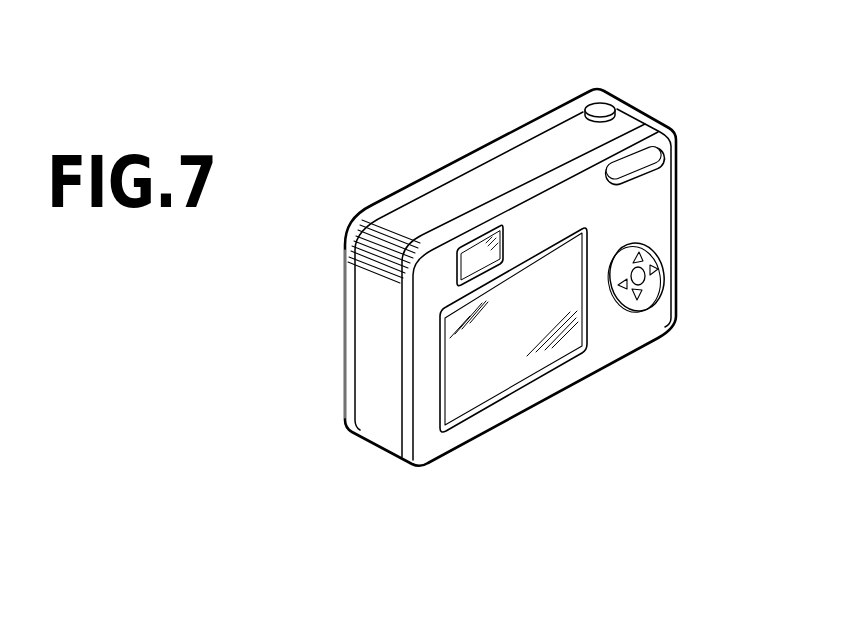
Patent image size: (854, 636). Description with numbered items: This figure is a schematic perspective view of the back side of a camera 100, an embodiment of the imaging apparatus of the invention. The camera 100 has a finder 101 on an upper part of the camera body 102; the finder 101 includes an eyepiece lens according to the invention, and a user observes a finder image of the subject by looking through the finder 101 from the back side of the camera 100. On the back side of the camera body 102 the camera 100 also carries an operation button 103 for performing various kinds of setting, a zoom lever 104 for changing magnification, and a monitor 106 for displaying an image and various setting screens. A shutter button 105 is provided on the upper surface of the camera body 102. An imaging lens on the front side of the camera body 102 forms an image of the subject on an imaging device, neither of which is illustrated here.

The camera 100 is at (410, 79).
The finder 101 is at (470, 253).
The camera body 102 is at (366, 352).
The operation button 103 is at (660, 280).
The zoom lever 104 is at (665, 158).
The shutter button 105 is at (599, 108).
The monitor 106 is at (545, 355).